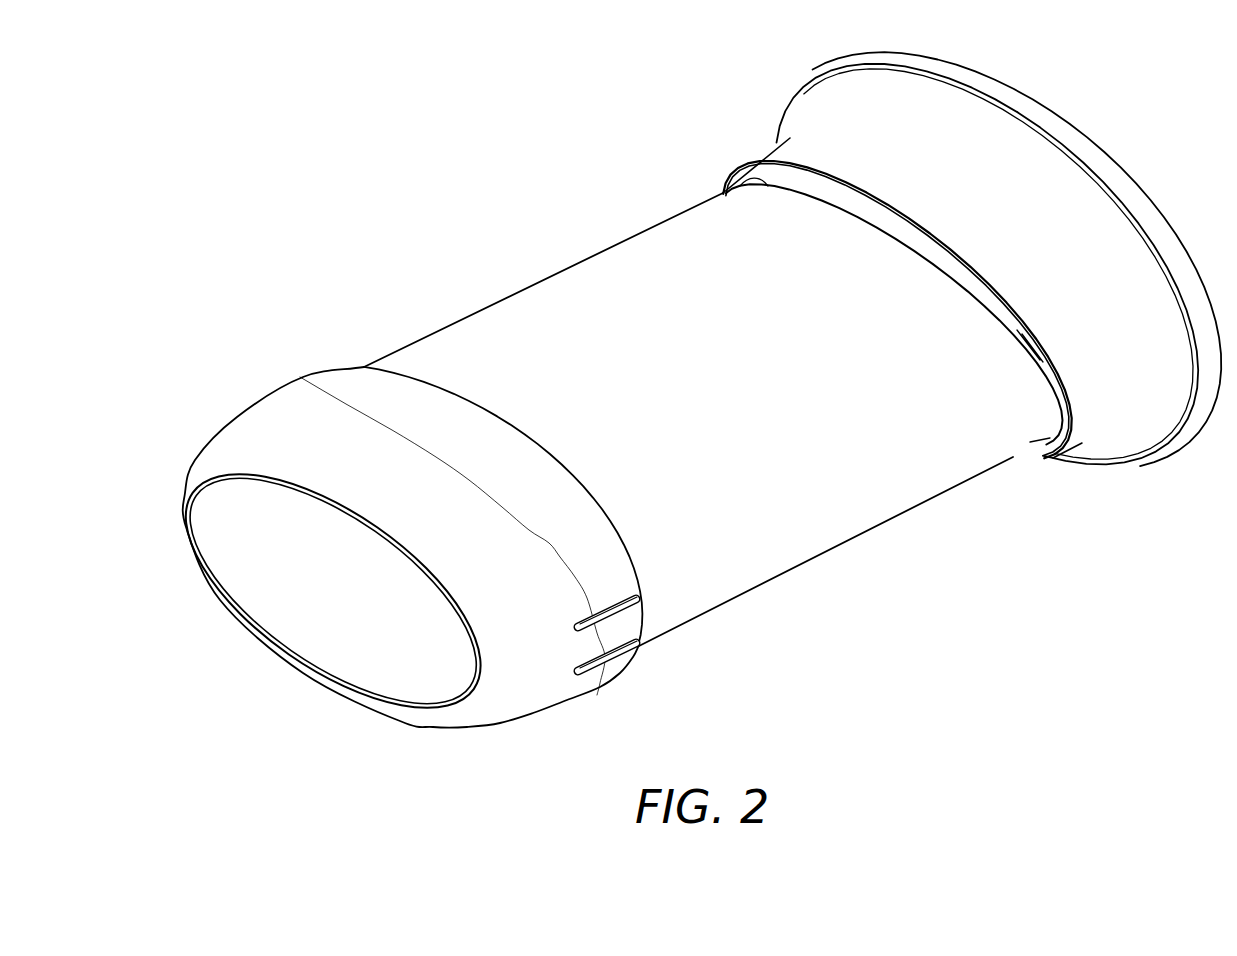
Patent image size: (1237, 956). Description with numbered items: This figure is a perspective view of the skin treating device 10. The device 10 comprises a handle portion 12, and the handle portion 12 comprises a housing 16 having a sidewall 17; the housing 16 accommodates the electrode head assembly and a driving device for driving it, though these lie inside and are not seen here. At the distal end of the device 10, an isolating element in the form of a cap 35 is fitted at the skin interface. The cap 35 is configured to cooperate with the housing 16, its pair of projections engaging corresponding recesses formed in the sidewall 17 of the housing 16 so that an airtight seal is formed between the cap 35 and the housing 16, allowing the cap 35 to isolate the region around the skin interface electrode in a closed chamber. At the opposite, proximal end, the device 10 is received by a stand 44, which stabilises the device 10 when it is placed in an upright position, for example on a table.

The device 10 is at (366, 289).
The handle portion 12 is at (955, 503).
The housing 16 is at (833, 535).
The sidewall 17 is at (587, 278).
The cap 35 is at (542, 698).
The stand 44 is at (1132, 452).